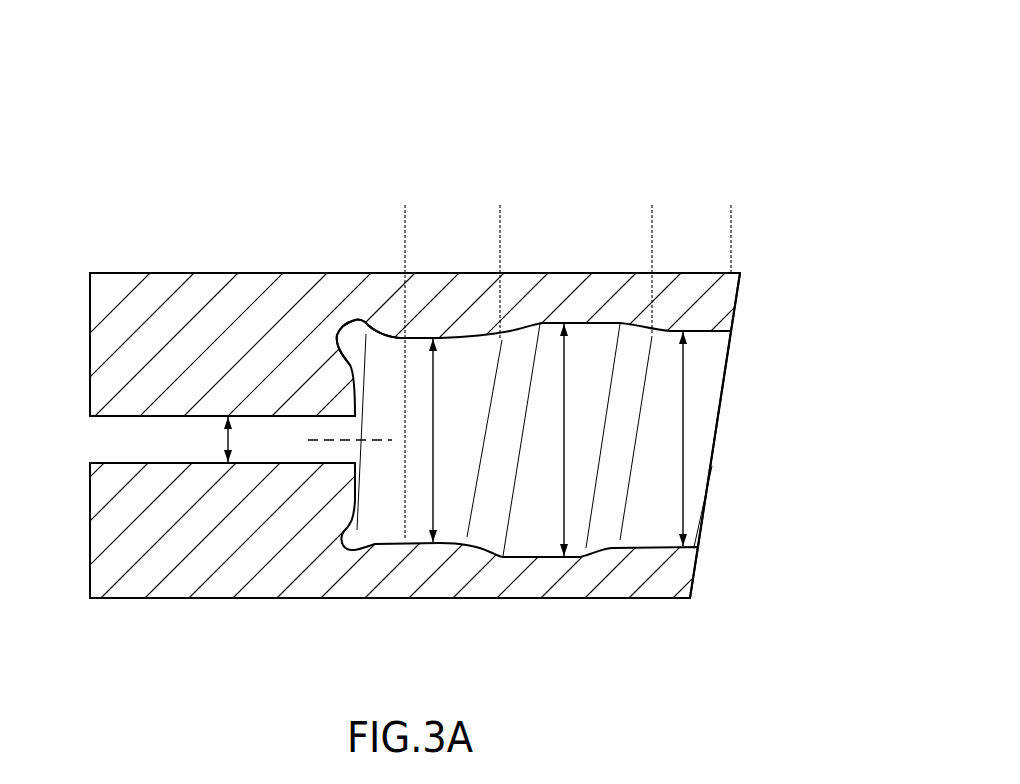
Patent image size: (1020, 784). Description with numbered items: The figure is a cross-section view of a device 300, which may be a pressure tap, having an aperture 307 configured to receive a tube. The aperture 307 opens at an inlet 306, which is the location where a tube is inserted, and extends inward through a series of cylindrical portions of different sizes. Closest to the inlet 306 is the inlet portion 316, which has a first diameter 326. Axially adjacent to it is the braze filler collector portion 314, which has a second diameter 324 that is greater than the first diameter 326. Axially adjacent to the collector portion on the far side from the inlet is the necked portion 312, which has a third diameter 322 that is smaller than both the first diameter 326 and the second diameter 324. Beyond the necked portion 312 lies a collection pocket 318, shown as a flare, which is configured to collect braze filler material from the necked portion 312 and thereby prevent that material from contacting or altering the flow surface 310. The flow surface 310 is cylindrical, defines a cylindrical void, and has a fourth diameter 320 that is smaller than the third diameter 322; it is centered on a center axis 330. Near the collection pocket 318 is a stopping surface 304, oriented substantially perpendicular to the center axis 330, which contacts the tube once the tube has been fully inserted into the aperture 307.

The device 300 is at (480, 111).
The stopping surface 304 is at (360, 483).
The inlet 306 is at (722, 413).
The aperture 307 is at (724, 462).
The flow surface 310 is at (118, 463).
The necked portion 312 is at (499, 222).
The braze filler collector portion 314 is at (651, 222).
The inlet portion 316 is at (730, 222).
The collection pocket 318 is at (355, 318).
The fourth diameter 320 is at (233, 440).
The third diameter 322 is at (435, 462).
The second diameter 324 is at (567, 462).
The first diameter 326 is at (683, 462).
The center axis 330 is at (322, 440).